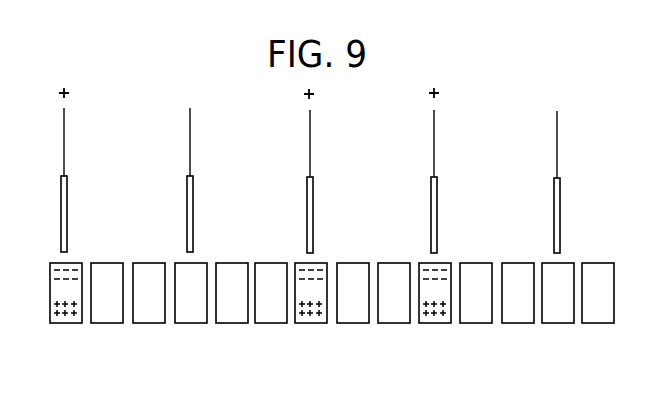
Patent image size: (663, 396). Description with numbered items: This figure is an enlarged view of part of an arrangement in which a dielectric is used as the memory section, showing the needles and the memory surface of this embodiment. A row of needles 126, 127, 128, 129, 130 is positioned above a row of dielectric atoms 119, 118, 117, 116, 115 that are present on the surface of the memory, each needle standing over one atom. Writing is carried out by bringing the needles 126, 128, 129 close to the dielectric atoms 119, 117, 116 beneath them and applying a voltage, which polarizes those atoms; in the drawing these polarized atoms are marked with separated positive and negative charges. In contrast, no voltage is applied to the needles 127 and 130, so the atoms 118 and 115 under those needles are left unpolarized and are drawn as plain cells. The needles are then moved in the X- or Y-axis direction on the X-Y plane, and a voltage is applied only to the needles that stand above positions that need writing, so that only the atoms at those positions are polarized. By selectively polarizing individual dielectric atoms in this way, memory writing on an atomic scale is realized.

The dielectric atom 115 is at (555, 323).
The dielectric atom 116 is at (438, 323).
The dielectric atom 117 is at (307, 323).
The dielectric atom 118 is at (190, 323).
The dielectric atom 119 is at (68, 323).
The needle 126 is at (67, 229).
The needle 127 is at (193, 229).
The needle 128 is at (313, 229).
The needle 129 is at (437, 229).
The needle 130 is at (560, 230).